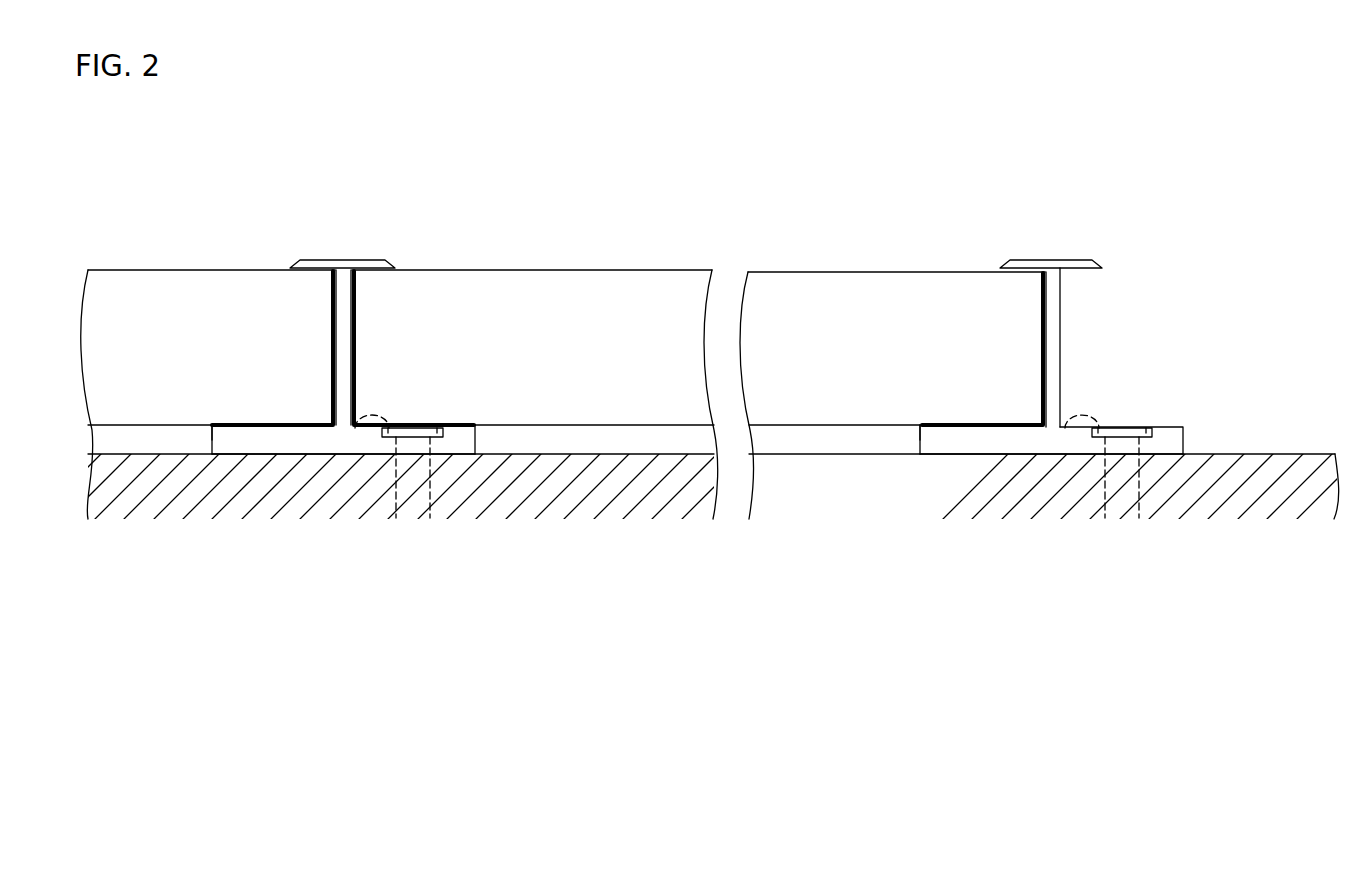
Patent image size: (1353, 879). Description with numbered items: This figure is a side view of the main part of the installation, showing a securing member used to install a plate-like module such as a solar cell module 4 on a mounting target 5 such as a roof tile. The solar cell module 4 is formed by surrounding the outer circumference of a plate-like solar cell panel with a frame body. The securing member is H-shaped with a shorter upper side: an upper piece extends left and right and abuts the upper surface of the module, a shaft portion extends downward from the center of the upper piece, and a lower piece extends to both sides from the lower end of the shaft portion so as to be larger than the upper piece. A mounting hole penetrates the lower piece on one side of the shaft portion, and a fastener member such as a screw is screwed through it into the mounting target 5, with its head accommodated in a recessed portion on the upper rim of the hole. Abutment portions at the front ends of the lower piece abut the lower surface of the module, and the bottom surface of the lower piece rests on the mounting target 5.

The solar cell module 4 is at (138, 269).
The mounting target 5 is at (1250, 467).